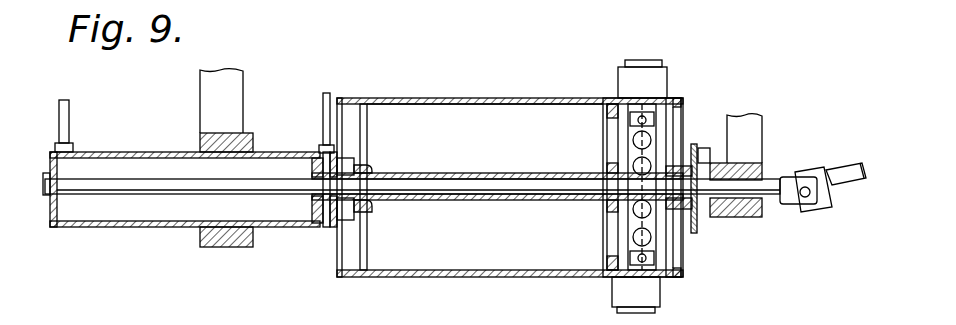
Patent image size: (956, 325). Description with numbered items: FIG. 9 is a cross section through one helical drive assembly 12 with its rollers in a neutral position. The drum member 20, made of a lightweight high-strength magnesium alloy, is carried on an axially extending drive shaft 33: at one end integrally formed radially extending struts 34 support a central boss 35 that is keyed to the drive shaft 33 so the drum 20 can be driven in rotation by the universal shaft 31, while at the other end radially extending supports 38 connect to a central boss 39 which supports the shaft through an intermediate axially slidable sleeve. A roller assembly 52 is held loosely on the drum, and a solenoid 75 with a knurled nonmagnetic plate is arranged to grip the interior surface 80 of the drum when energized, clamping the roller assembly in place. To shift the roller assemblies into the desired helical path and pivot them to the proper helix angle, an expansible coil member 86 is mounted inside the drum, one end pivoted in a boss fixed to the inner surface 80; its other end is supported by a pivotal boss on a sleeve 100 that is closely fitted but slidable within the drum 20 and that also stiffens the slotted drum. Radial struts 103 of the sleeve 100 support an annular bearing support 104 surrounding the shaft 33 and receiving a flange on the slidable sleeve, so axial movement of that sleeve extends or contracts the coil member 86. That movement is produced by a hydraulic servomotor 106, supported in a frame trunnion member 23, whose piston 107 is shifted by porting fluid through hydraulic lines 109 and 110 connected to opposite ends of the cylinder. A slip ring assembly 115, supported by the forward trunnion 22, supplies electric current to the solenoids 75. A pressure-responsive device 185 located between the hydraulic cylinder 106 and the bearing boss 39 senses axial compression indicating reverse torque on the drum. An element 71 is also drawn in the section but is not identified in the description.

The helical drive assembly 12 is at (426, 56).
The drum member 20 is at (462, 97).
The forward trunnion 22 is at (742, 163).
The frame trunnion member 23 is at (202, 133).
The universal shaft 31 is at (856, 172).
The drive shaft 33 is at (446, 174).
The radially extending struts 34 is at (682, 135).
The central boss 35 is at (690, 168).
The radially extending supports 38 is at (368, 124).
The central boss 39 is at (369, 172).
The roller assembly 52 is at (650, 60).
The shaft 71 is at (450, 201).
The solenoid 75 is at (655, 238).
The interior surface 80 is at (530, 106).
The coil member 86 is at (634, 118).
The sleeve 100 is at (610, 105).
The radial struts 103 is at (608, 137).
The annular bearing support 104 is at (608, 208).
The hydraulic servomotor 106 is at (124, 228).
The piston 107 is at (313, 170).
The hydraulic line 109 is at (69, 117).
The hydraulic line 110 is at (324, 118).
The slip ring assembly 115 is at (700, 229).
The pressure-responsive device 185 is at (348, 216).